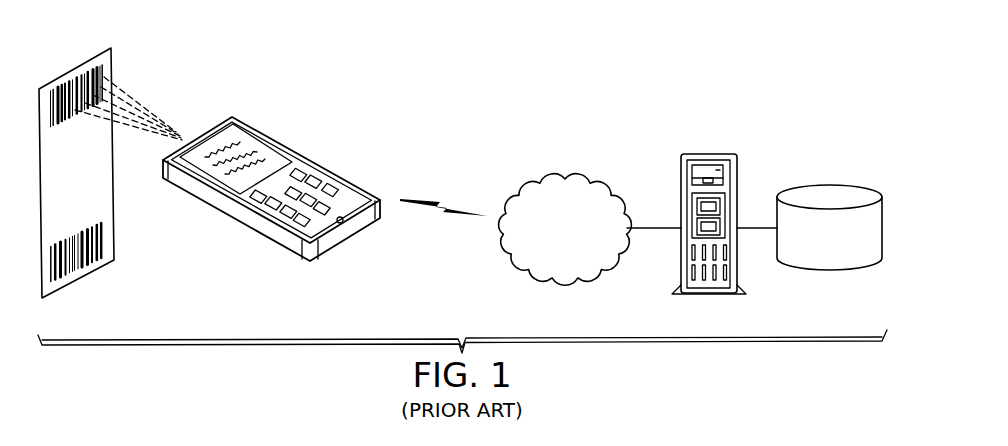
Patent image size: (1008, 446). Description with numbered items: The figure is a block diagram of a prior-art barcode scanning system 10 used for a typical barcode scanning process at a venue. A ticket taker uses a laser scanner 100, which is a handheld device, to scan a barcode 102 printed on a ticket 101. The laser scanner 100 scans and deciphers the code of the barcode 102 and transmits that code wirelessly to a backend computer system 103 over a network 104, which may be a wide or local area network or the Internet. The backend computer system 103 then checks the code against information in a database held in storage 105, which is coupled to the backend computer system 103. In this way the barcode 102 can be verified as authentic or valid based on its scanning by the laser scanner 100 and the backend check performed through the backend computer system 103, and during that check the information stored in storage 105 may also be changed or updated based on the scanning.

The barcode scanning system 10 is at (617, 130).
The laser scanner 100 is at (271, 185).
The ticket 101 is at (92, 188).
The barcode 102 is at (116, 165).
The backend computer system 103 is at (709, 198).
The network 104 is at (565, 209).
The storage 105 is at (829, 202).